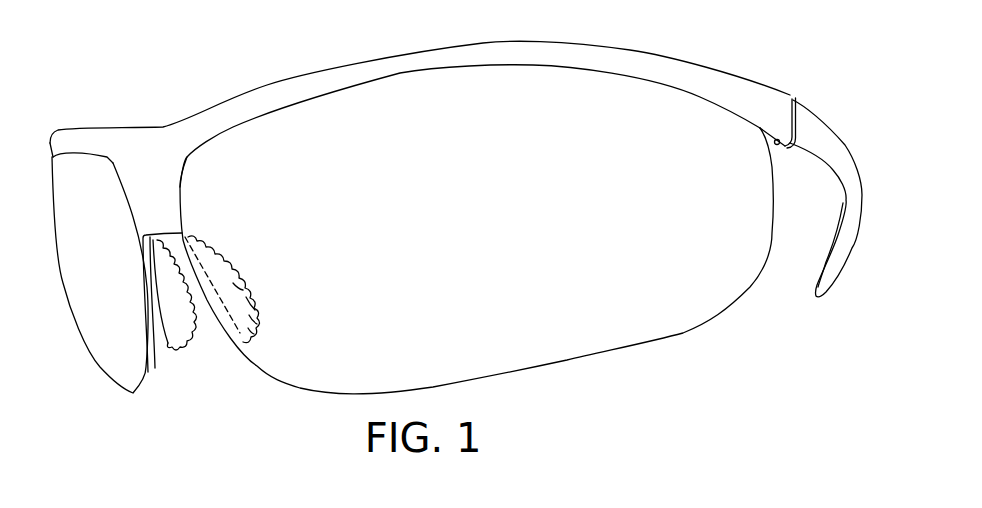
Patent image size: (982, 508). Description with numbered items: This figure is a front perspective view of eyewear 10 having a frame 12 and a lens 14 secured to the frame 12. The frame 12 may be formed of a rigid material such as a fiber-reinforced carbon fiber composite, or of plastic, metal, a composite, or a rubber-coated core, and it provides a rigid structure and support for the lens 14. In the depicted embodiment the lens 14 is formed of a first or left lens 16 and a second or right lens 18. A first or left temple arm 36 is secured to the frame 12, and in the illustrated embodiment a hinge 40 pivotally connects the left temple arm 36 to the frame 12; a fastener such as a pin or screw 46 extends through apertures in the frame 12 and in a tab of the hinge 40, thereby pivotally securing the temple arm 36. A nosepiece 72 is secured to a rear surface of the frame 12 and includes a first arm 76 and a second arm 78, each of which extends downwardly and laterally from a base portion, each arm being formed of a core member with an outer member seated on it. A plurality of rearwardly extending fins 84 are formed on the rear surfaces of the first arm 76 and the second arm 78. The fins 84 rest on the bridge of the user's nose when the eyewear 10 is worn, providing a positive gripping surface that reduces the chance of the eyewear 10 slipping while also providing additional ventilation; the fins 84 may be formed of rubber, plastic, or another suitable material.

The eyewear 10 is at (252, 61).
The frame 12 is at (392, 63).
The lens 14 is at (129, 413).
The left lens 16 is at (488, 222).
The right lens 18 is at (88, 270).
The left temple arm 36 is at (838, 150).
The hinge 40 is at (798, 96).
The pin or screw 46 is at (780, 147).
The nosepiece 72 is at (243, 236).
The first arm 76 is at (230, 289).
The second arm 78 is at (163, 330).
The fins 84 is at (263, 313).